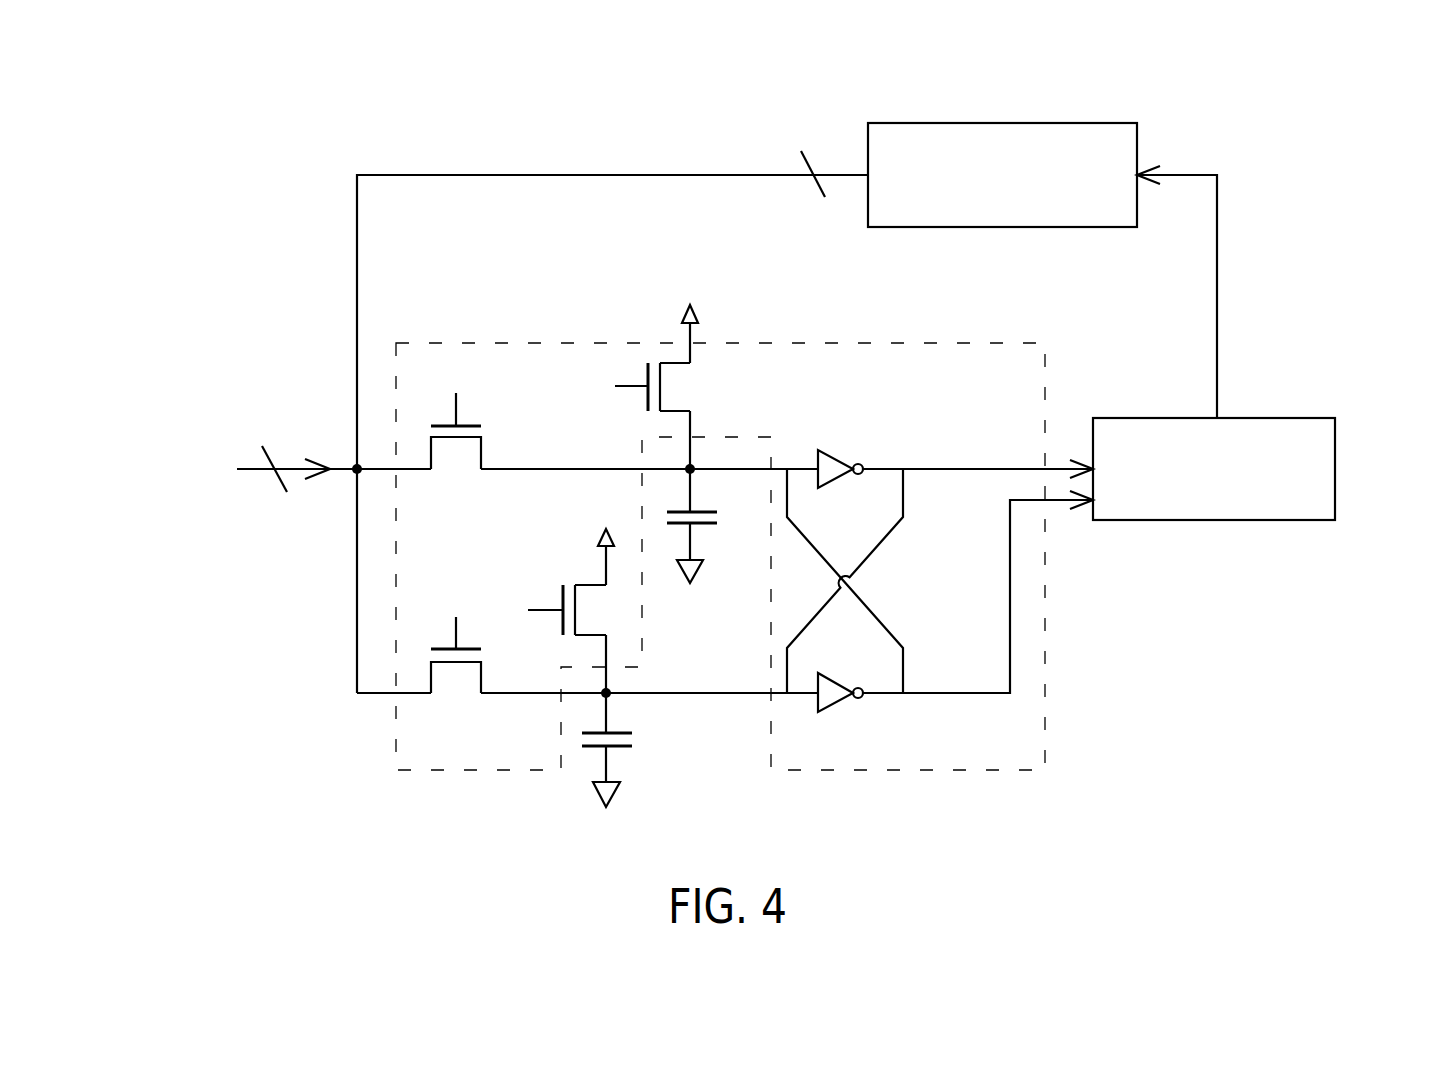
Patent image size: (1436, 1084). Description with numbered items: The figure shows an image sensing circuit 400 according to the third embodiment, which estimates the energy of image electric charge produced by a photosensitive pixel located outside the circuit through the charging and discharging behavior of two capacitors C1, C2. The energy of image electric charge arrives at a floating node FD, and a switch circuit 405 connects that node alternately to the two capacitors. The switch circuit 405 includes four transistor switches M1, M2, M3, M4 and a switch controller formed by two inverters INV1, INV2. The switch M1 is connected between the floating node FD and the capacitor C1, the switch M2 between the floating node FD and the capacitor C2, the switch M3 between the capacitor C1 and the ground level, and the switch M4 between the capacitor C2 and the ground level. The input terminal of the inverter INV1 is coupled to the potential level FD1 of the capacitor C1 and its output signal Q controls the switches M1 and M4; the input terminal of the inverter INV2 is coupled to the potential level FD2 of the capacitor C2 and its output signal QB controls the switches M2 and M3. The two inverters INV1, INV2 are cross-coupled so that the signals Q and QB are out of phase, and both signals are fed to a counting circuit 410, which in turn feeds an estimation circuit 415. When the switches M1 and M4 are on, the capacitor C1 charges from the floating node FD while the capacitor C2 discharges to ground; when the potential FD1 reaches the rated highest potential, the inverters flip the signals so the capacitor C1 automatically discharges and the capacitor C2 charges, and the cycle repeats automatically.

The image sensing circuit 400 is at (1292, 130).
The switch circuit 405 is at (975, 342).
The counting circuit 410 is at (1310, 418).
The estimation circuit 415 is at (1115, 123).
The floating node FD is at (355, 468).
The potential level of capacitor C1 FD1 is at (692, 467).
The potential level of capacitor C2 FD2 is at (608, 692).
The switch M1 is at (624, 434).
The switch M2 is at (624, 659).
The switch M3 is at (646, 370).
The switch M4 is at (567, 593).
The capacitor C1 is at (709, 544).
The capacitor C2 is at (627, 765).
The inverter INV1 is at (839, 453).
The inverter INV2 is at (839, 711).